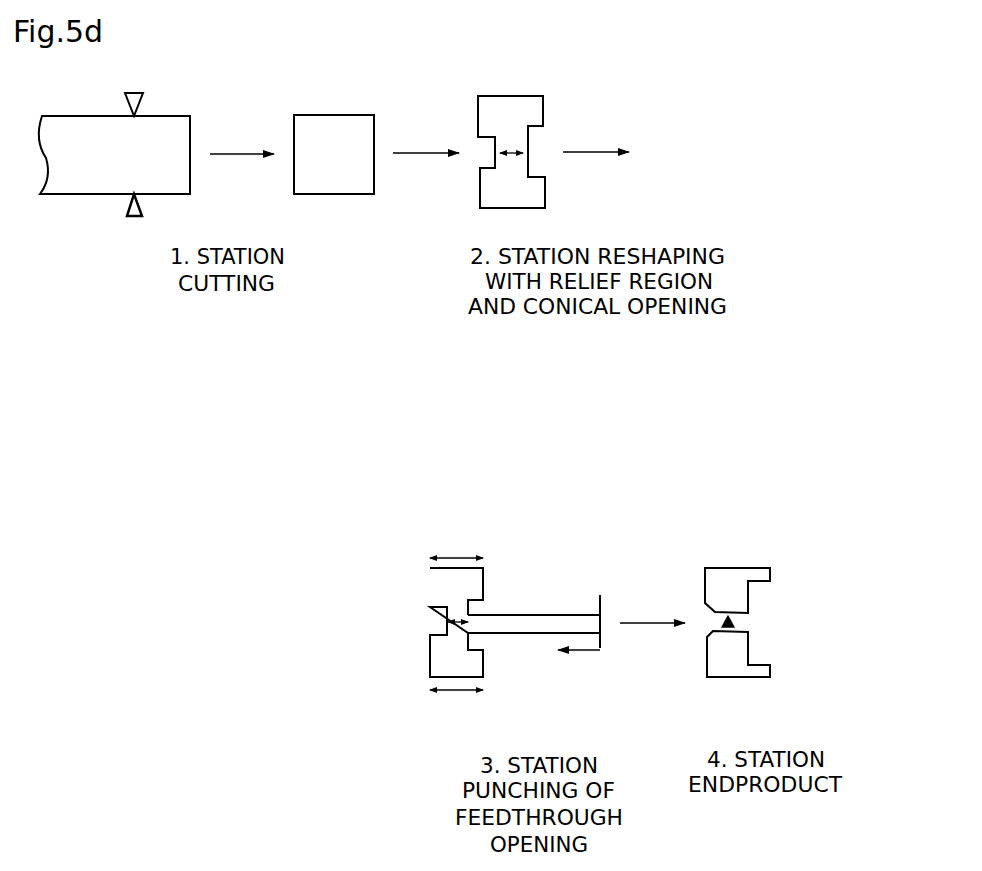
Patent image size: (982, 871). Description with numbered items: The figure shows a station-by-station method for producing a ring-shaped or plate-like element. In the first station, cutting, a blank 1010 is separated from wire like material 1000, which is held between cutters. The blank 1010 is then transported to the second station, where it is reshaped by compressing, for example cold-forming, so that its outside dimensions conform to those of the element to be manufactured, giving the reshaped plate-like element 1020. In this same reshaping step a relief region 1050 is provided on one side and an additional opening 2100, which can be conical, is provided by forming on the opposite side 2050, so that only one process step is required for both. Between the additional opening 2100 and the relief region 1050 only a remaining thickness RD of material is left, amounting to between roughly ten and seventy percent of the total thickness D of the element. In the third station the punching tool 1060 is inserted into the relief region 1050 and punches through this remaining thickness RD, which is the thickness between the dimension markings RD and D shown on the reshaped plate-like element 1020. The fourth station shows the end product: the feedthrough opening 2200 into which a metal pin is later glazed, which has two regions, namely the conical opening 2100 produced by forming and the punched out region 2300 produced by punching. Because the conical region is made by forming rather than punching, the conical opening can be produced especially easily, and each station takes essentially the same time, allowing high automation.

The wire like material 1000 is at (74, 177).
The blank 1010 is at (338, 175).
The reshaped plate-like element 1020 is at (518, 110).
The relief region 1050 is at (532, 144).
The punching tool 1060 is at (545, 623).
The opposite side 2050 is at (477, 113).
The additional opening 2100 is at (505, 152).
The feedthrough opening 2200 is at (728, 628).
The punched out region 2300 is at (743, 613).
The remaining thickness RD is at (510, 160).
The total thickness D is at (467, 556).